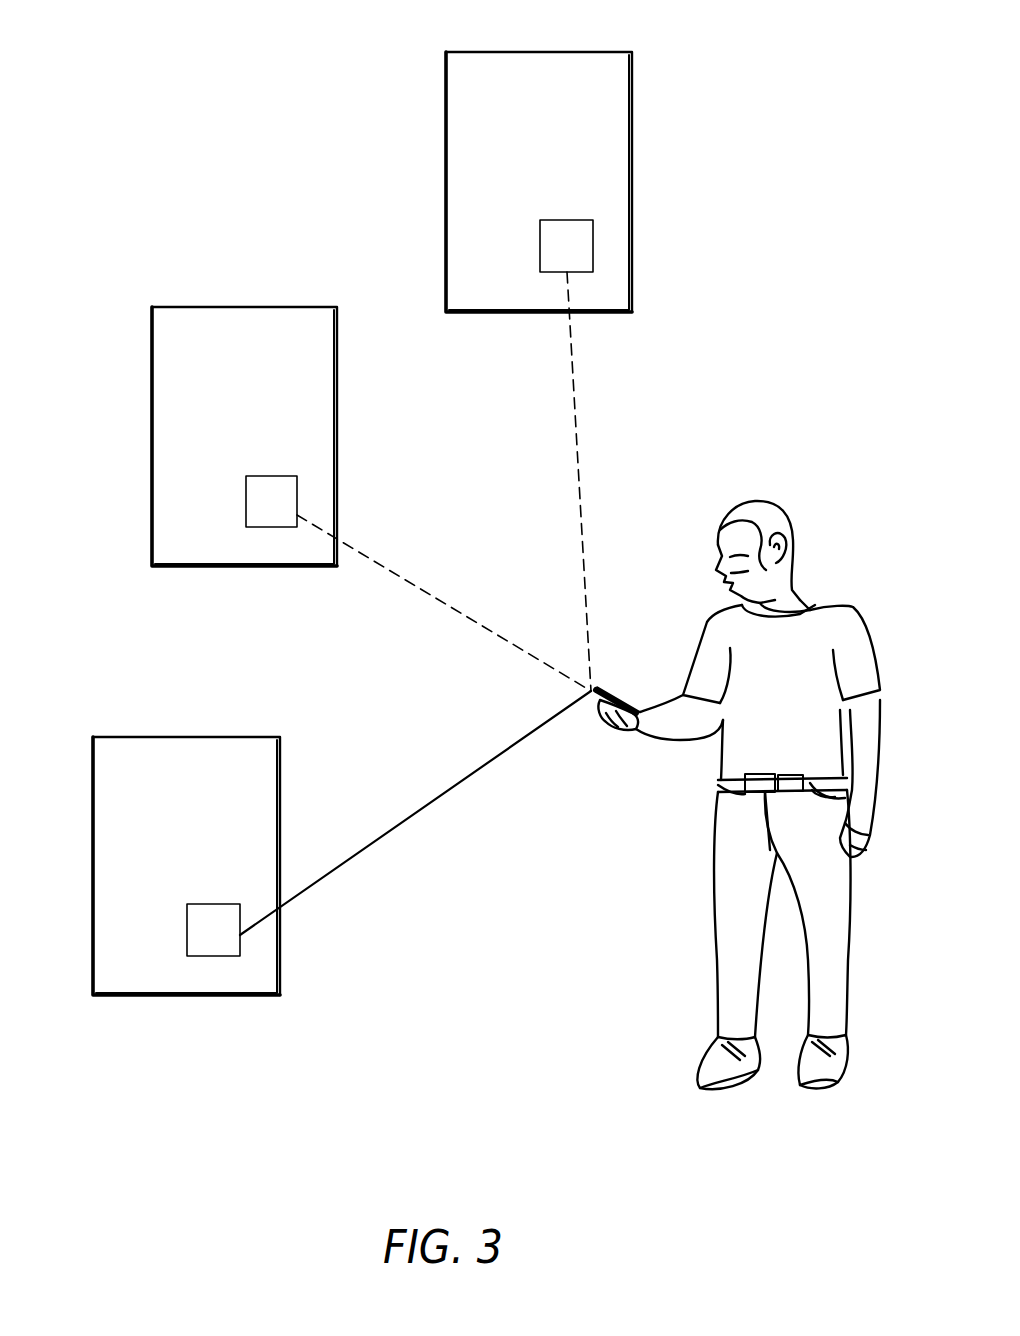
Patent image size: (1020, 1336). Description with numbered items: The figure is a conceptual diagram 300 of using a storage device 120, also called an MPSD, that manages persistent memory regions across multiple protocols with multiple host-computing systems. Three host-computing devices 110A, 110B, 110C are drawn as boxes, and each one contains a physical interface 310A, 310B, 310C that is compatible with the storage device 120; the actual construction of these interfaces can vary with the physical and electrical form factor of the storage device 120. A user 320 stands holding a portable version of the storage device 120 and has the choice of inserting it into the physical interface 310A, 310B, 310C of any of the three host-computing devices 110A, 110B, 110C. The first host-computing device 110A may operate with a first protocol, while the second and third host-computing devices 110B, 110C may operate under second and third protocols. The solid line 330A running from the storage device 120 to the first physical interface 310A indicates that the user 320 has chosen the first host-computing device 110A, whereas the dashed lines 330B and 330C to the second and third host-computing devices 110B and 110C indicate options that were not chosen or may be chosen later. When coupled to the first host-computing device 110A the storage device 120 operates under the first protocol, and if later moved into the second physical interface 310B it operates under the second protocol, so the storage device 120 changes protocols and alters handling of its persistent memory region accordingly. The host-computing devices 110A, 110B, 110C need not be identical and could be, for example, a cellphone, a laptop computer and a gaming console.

The conceptual diagram 300 is at (190, 164).
The first host-computing device 110A is at (174, 736).
The second host-computing device 110B is at (233, 306).
The third host-computing device 110C is at (527, 51).
The first physical interface 310A is at (187, 929).
The second physical interface 310B is at (246, 501).
The third physical interface 310C is at (540, 246).
The solid line 330A is at (430, 805).
The dashed line 330B is at (432, 588).
The dashed line 330C is at (574, 417).
The storage device 120 is at (630, 692).
The user 320 is at (851, 611).